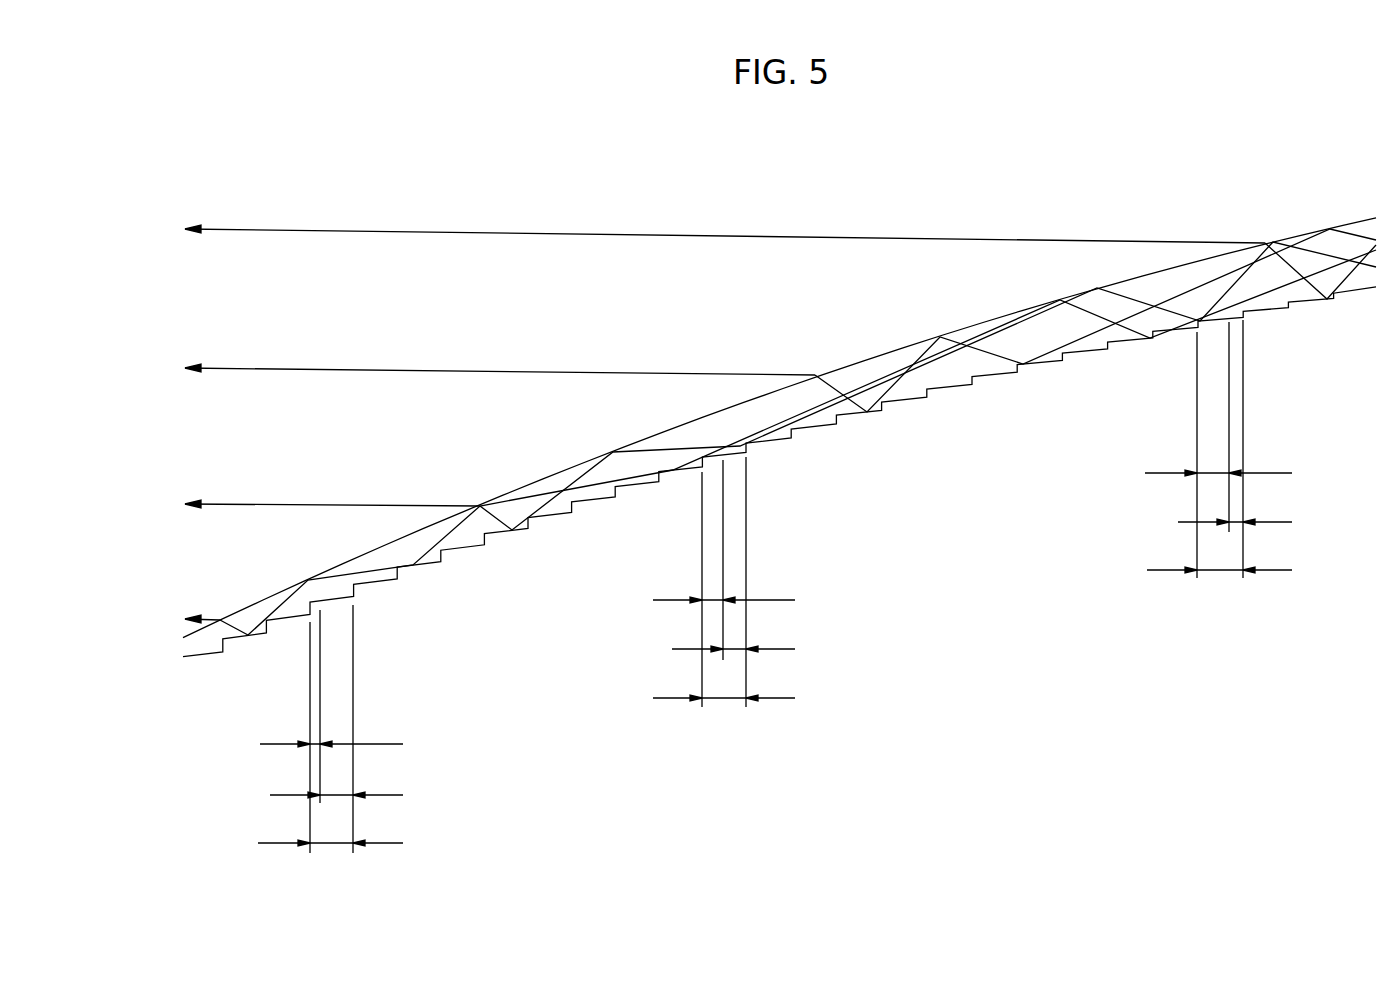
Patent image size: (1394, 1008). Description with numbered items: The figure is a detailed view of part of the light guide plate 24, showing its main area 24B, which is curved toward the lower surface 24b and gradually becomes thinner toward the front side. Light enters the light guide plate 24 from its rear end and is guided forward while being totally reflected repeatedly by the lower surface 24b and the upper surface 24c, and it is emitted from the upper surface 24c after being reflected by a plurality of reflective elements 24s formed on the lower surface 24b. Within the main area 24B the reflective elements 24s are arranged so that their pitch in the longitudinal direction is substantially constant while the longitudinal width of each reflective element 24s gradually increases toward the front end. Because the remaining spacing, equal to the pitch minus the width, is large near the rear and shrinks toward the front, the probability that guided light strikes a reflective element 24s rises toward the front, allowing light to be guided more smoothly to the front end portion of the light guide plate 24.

The light guide plate 24 is at (688, 265).
The main area 24B is at (718, 425).
The upper surface 24c is at (865, 358).
The lower surface 24b is at (895, 402).
The reflective elements 24s is at (337, 607).